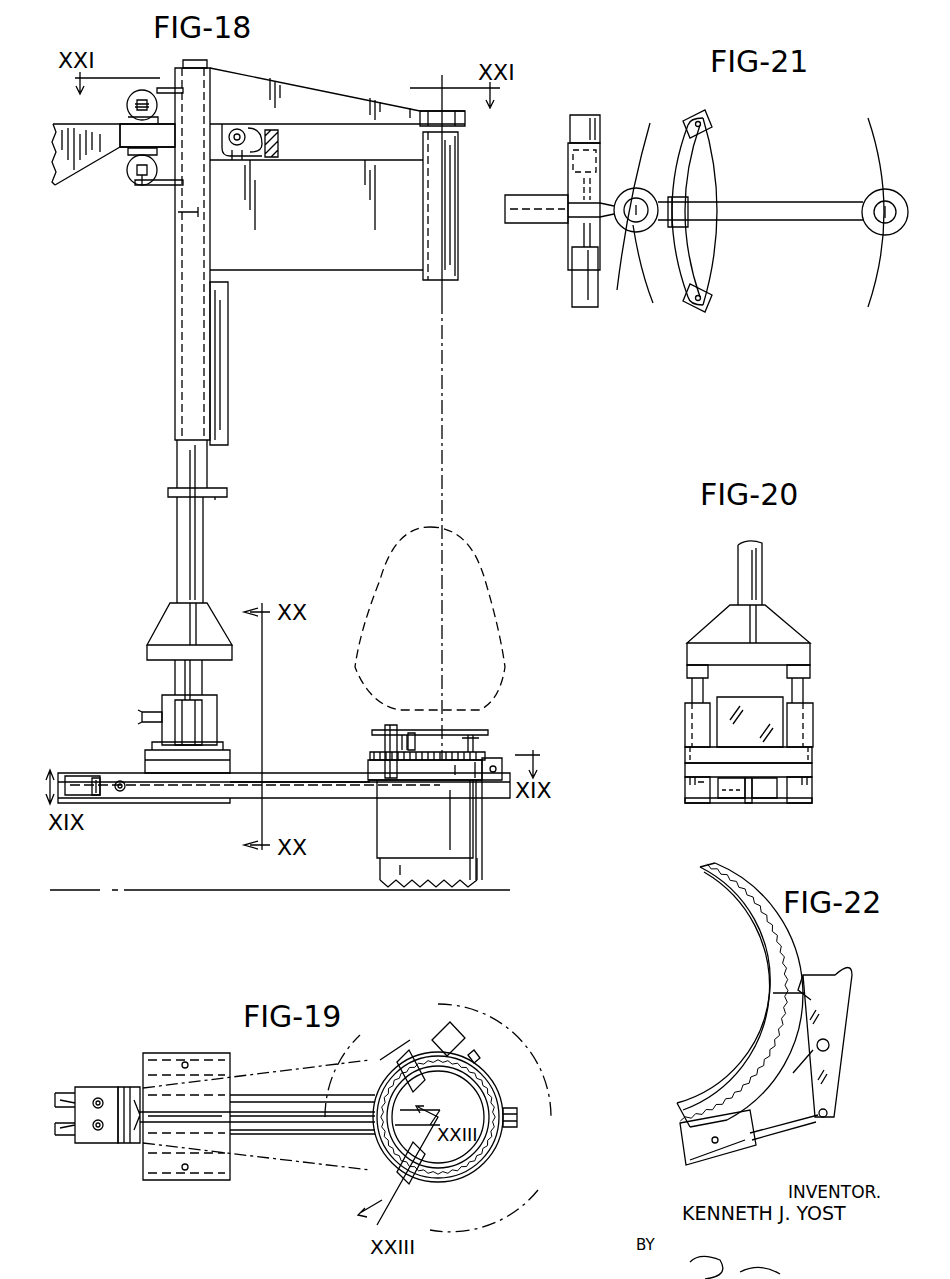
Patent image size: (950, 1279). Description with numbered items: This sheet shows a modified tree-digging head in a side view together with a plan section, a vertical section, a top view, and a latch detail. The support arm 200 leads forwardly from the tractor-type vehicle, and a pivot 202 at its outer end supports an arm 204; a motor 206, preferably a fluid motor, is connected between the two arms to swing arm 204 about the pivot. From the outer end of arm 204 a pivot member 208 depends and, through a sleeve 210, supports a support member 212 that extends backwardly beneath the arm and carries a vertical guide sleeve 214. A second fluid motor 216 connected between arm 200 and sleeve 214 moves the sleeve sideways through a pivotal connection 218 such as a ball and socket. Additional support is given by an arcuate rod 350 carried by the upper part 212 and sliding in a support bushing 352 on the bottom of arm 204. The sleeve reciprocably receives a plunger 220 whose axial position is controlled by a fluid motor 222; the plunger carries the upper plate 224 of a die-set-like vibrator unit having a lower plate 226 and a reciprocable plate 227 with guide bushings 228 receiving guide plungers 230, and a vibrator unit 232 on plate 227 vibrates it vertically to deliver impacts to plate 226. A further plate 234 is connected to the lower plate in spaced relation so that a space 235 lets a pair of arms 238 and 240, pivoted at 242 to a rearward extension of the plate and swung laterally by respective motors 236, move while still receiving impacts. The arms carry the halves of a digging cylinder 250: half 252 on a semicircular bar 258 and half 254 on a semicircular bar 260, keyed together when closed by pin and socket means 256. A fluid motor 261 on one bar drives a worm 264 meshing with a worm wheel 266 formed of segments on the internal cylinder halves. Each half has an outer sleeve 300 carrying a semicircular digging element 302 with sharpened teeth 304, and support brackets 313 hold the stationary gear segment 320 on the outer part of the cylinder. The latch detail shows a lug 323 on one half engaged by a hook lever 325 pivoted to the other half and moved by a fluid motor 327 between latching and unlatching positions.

In FIG. 18, the support arm 200 is at (62, 190).
In FIG. 21, the support arm 200 is at (525, 226).
In FIG. 18, the pivot 202 is at (197, 67).
In FIG. 21, the pivot 202 is at (634, 240).
In FIG. 18, the arm 204 is at (320, 87).
In FIG. 21, the arm 204 is at (752, 222).
In FIG. 18, the motor 206 is at (128, 101).
In FIG. 21, the motor 206 is at (572, 288).
In FIG. 18, the pivot member 208 is at (462, 126).
In FIG. 21, the pivot member 208 is at (885, 228).
In FIG. 18, the sleeve 210 is at (460, 168).
In FIG. 18, the support member 212 is at (325, 262).
In FIG. 18, the vertical guide sleeve 214 is at (190, 255).
In FIG. 18, the second fluid motor 216 is at (128, 174).
In FIG. 21, the second fluid motor 216 is at (582, 115).
In FIG. 18, the pivotal connection 218 is at (143, 190).
In FIG. 18, the plunger 220 is at (190, 535).
In FIG. 20, the plunger 220 is at (755, 568).
In FIG. 18, the fluid motor 222 is at (224, 425).
In FIG. 18, the upper plate 224 is at (152, 652).
In FIG. 20, the upper plate 224 is at (800, 658).
In FIG. 18, the lower plate 226 is at (148, 768).
In FIG. 20, the lower plate 226 is at (696, 770).
In FIG. 18, the reciprocable plate 227 is at (143, 732).
In FIG. 20, the reciprocable plate 227 is at (692, 757).
In FIG. 18, the guide bushings 228 is at (190, 725).
In FIG. 20, the guide bushings 228 is at (696, 719).
In FIG. 18, the guide plungers 230 is at (180, 690).
In FIG. 18, the vibrator unit 232 is at (208, 705).
In FIG. 20, the vibrator unit 232 is at (770, 710).
In FIG. 18, the plate 234 is at (172, 804).
In FIG. 20, the plate 234 is at (780, 805).
In FIG. 19, the plate 234 is at (95, 1143).
In FIG. 20, the space 235 is at (770, 790).
In FIG. 20, the motors 236 is at (712, 805).
In FIG. 19, the motors 236 is at (125, 1087).
In FIG. 18, the arm 238 is at (286, 778).
In FIG. 20, the arm 238 is at (735, 805).
In FIG. 19, the arm 238 is at (278, 1140).
In FIG. 20, the arm 240 is at (757, 810).
In FIG. 19, the arm 240 is at (278, 1095).
In FIG. 18, the pivotal connection 242 is at (100, 800).
In FIG. 19, the pivotal connection 242 is at (95, 1125).
In FIG. 18, the digging cylinder 250 is at (500, 830).
In FIG. 19, the digging cylinder 250 is at (534, 1070).
In FIG. 19, the cylinder half 252 is at (496, 1145).
In FIG. 19, the cylinder half 254 is at (485, 1080).
In FIG. 19, the pin and socket means 256 is at (535, 1120).
In FIG. 18, the semicircular bar 258 is at (415, 790).
In FIG. 19, the semicircular bar 258 is at (482, 1162).
In FIG. 19, the semicircular bar 260 is at (500, 1097).
In FIG. 19, the fluid motor 261 is at (455, 1035).
In FIG. 19, the worm 264 is at (478, 1054).
In FIG. 18, the worm wheel 266 is at (378, 762).
In FIG. 19, the worm wheel 266 is at (418, 1055).
In FIG. 18, the sleeve 300 is at (458, 848).
In FIG. 18, the digging element 302 is at (458, 870).
In FIG. 18, the sharpened teeth 304 is at (400, 890).
In FIG. 18, the support brackets 313 is at (385, 735).
In FIG. 19, the support brackets 313 is at (410, 1050).
In FIG. 18, the stationary gear segment 320 is at (465, 735).
In FIG. 22, the lug 323 is at (808, 972).
In FIG. 22, the hook lever 325 is at (842, 1012).
In FIG. 22, the fluid motor 327 is at (740, 1145).
In FIG. 18, the arcuate rod 350 is at (243, 150).
In FIG. 21, the arcuate rod 350 is at (694, 175).
In FIG. 18, the support bushing 352 is at (236, 130).
In FIG. 21, the support bushing 352 is at (712, 262).